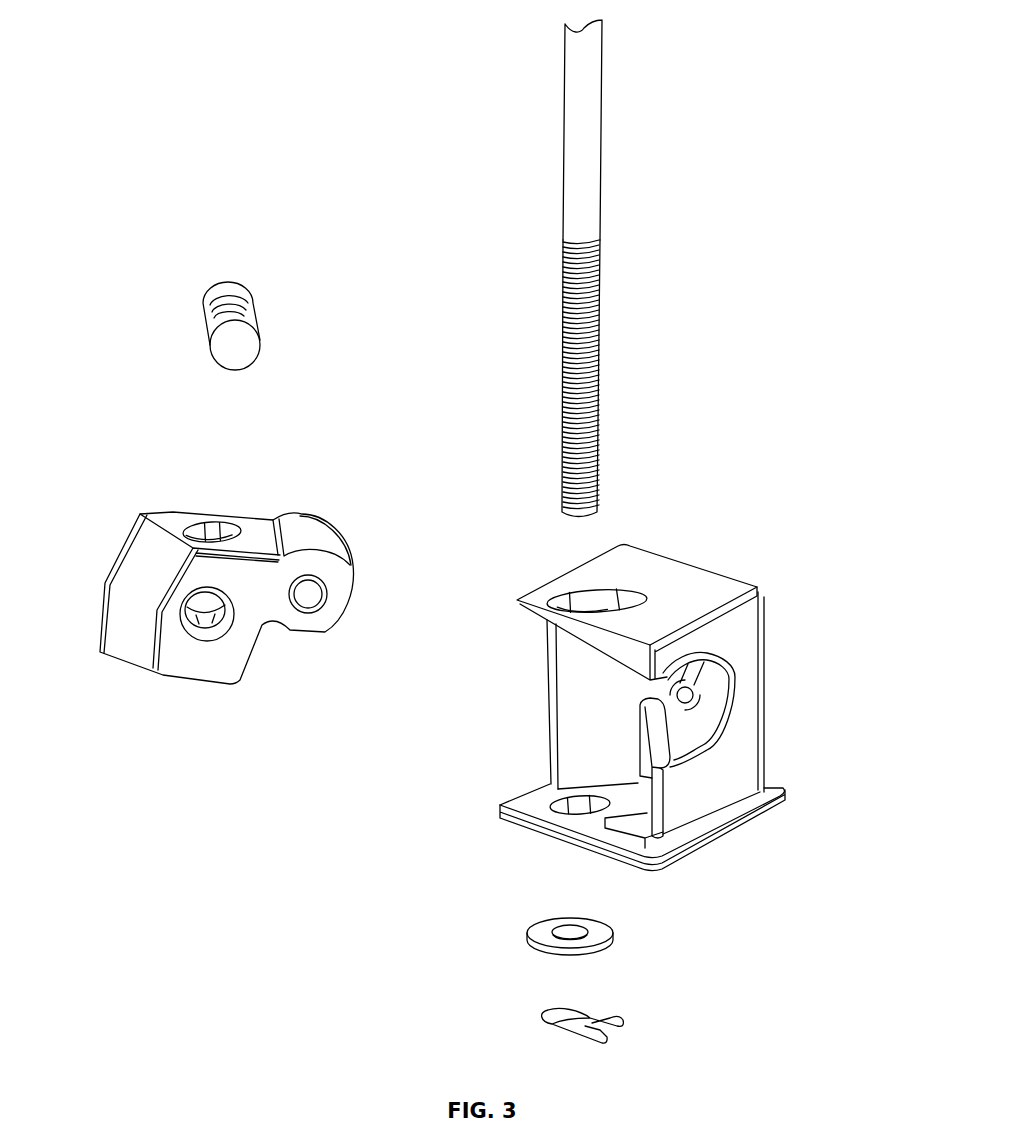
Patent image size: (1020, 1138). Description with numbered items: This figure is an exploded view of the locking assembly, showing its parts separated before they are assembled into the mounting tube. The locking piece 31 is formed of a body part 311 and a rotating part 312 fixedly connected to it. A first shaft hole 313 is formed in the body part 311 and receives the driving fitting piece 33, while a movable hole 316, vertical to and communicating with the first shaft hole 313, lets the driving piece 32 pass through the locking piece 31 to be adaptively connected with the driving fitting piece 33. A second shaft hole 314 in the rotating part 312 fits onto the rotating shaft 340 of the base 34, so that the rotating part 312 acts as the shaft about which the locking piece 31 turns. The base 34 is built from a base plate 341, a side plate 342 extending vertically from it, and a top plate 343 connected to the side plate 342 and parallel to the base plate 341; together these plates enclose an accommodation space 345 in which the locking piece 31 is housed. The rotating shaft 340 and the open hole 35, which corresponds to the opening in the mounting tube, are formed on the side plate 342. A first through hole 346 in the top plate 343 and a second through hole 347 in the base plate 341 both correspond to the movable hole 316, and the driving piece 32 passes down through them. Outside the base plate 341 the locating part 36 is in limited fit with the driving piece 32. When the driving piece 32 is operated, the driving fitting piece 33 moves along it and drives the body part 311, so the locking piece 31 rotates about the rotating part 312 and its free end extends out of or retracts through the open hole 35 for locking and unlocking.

The locking piece 31 is at (235, 598).
The body part 311 is at (240, 595).
The rotating part 312 is at (310, 567).
The first shaft hole 313 is at (198, 630).
The second shaft hole 314 is at (308, 598).
The movable hole 316 is at (198, 526).
The driving piece 32 is at (573, 173).
The driving fitting piece 33 is at (243, 315).
The base 34 is at (621, 679).
The rotating shaft 340 is at (680, 677).
The base plate 341 is at (575, 873).
The side plate 342 is at (620, 742).
The top plate 343 is at (681, 537).
The accommodation space 345 is at (650, 783).
The first through hole 346 is at (598, 603).
The second through hole 347 is at (575, 808).
The open hole 35 is at (546, 665).
The locating part 36 is at (625, 1018).